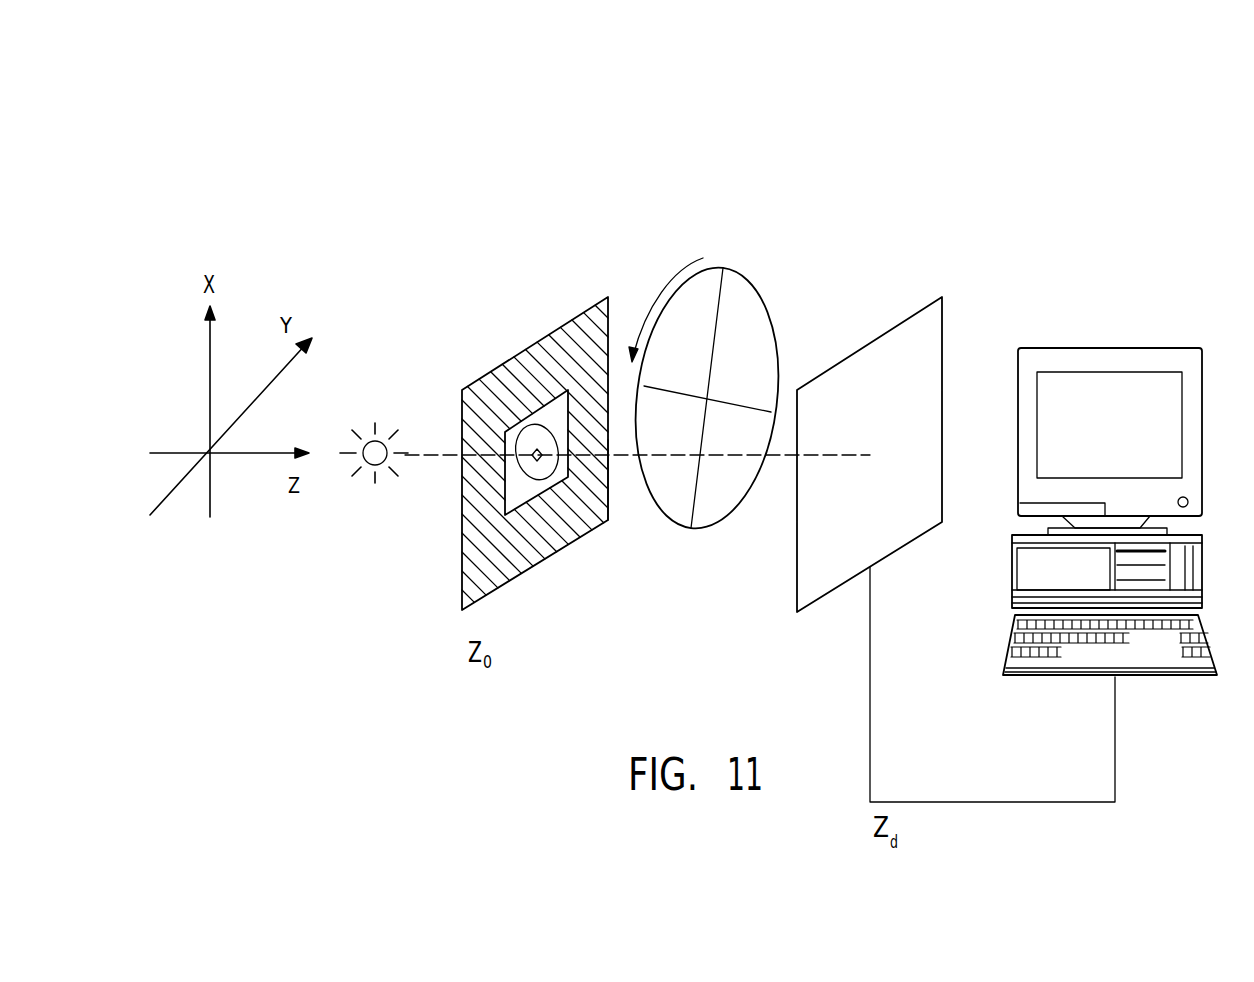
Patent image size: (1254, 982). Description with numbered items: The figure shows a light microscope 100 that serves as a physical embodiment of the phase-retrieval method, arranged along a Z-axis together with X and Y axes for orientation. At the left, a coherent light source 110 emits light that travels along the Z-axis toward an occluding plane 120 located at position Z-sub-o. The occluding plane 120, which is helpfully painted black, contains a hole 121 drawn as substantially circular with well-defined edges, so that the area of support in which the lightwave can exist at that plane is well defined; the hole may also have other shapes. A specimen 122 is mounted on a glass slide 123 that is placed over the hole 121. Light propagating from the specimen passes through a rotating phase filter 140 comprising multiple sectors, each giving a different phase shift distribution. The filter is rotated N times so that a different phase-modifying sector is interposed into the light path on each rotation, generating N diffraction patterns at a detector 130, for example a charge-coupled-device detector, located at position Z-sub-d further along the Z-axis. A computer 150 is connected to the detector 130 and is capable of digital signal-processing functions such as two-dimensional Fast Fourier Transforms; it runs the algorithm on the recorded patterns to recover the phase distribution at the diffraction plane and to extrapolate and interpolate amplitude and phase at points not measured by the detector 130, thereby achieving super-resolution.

The light microscope 100 is at (821, 165).
The coherent light source 110 is at (361, 414).
The occluding plane 120 is at (523, 331).
The hole 121 is at (607, 508).
The specimen 122 is at (537, 466).
The glass slide 123 is at (568, 449).
The detector 130 is at (857, 351).
The rotating phase filter 140 is at (727, 253).
The computer 150 is at (1112, 348).